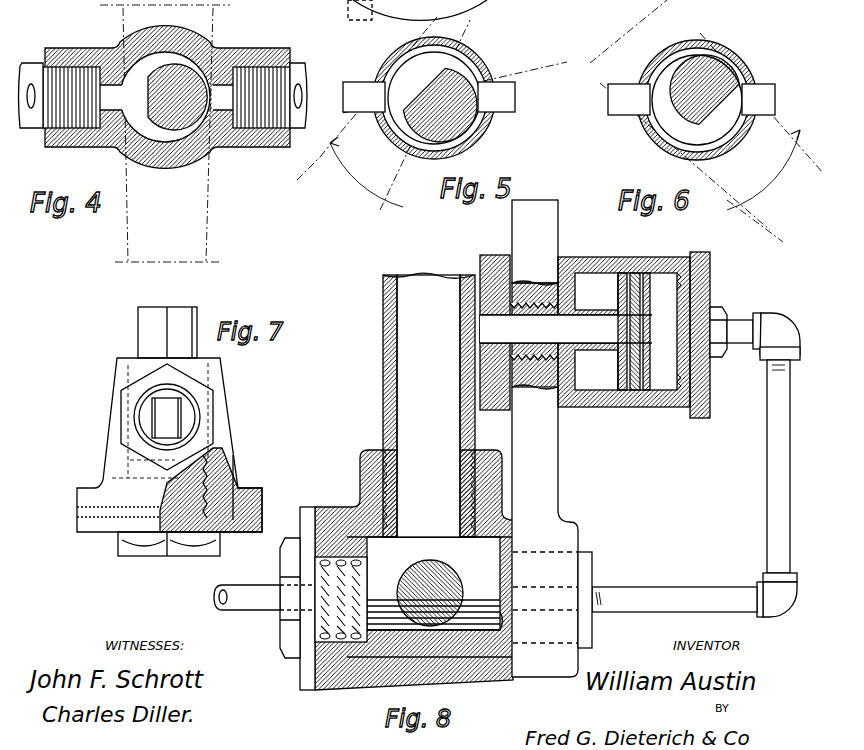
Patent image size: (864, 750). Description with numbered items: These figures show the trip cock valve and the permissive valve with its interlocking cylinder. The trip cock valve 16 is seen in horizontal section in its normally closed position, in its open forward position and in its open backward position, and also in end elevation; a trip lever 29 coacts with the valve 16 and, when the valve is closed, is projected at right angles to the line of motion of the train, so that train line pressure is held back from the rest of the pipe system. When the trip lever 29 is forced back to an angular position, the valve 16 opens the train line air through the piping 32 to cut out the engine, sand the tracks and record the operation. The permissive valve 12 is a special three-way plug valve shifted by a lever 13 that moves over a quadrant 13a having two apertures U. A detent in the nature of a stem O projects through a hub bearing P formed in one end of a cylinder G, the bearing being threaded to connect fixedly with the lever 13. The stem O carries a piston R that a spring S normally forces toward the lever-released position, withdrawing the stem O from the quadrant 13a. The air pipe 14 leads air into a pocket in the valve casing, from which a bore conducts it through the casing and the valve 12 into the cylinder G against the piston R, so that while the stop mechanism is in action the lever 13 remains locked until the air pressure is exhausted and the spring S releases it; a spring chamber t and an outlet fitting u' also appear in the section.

In FIG. 8, the permissive valve 12 is at (315, 553).
In FIG. 8, the lever 13 is at (552, 224).
In FIG. 8, the quadrant 13a is at (450, 362).
In FIG. 8, the air pipe 14 is at (262, 590).
In FIG. 4, the trip cock valve 16 is at (205, 34).
In FIG. 5, the trip cock valve 16 is at (470, 60).
In FIG. 6, the trip cock valve 16 is at (704, 43).
In FIG. 7, the trip cock valve 16 is at (110, 410).
In FIG. 4, the trip lever 29 is at (196, 178).
In FIG. 5, the trip lever 29 is at (515, 96).
In FIG. 4, the piping 32 is at (37, 66).
In FIG. 5, the piping 32 is at (429, 109).
In FIG. 6, the piping 32 is at (686, 110).
In FIG. 8, the hub bearing P is at (560, 260).
In FIG. 8, the cylinder G is at (584, 275).
In FIG. 8, the spring S is at (594, 275).
In FIG. 8, the piston R is at (658, 262).
In FIG. 8, the aperture U is at (480, 305).
In FIG. 8, the stem O is at (490, 327).
In FIG. 8, the spring chamber t is at (315, 558).
In FIG. 8, the outlet pipe fitting u' is at (658, 480).